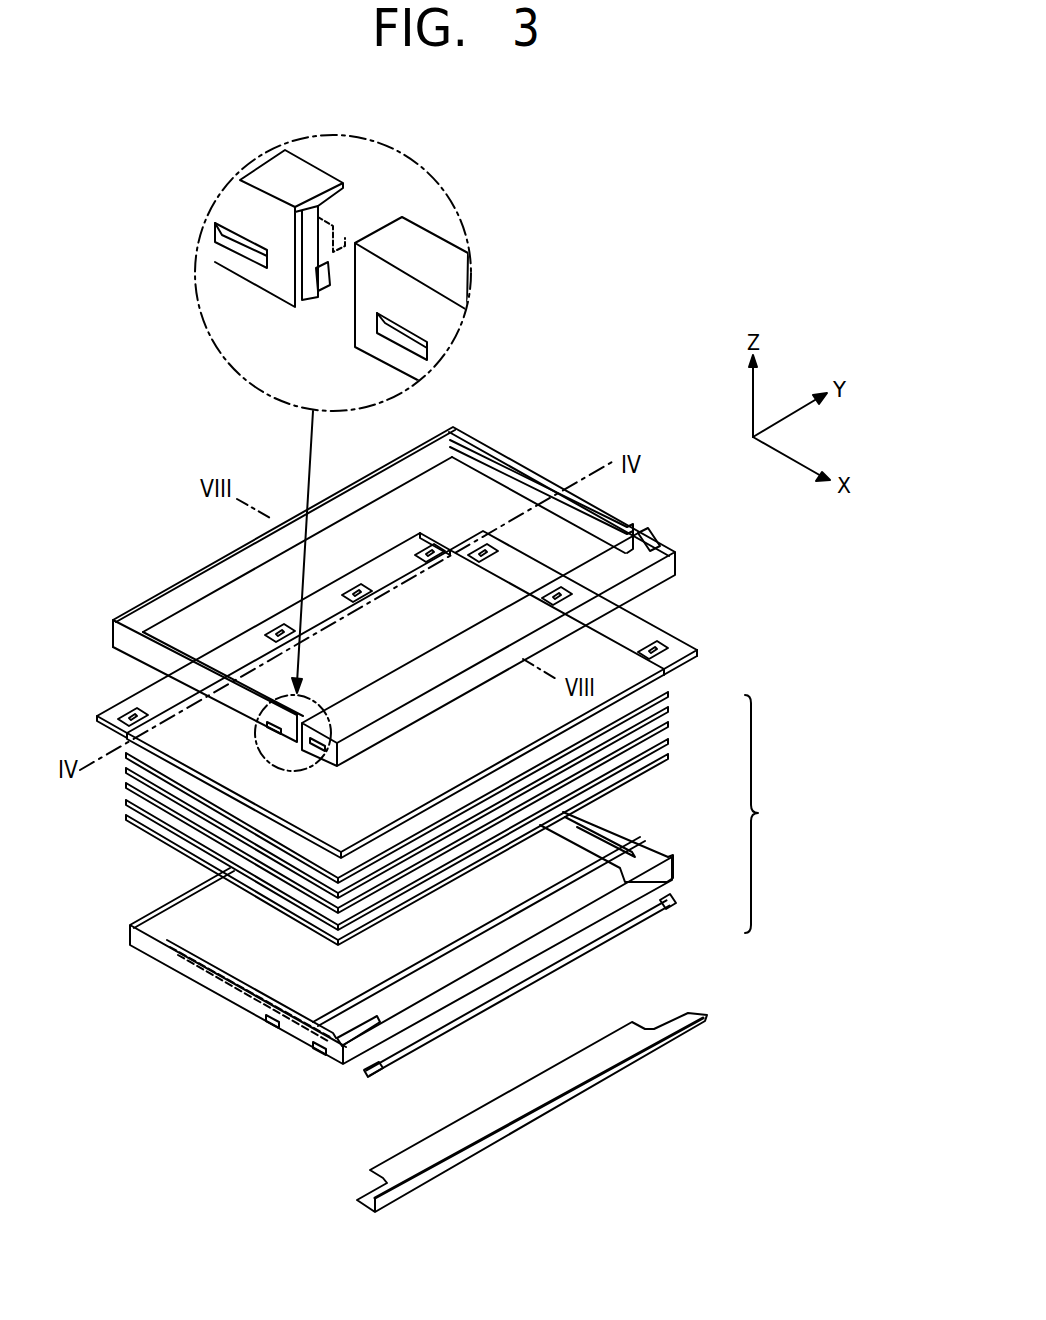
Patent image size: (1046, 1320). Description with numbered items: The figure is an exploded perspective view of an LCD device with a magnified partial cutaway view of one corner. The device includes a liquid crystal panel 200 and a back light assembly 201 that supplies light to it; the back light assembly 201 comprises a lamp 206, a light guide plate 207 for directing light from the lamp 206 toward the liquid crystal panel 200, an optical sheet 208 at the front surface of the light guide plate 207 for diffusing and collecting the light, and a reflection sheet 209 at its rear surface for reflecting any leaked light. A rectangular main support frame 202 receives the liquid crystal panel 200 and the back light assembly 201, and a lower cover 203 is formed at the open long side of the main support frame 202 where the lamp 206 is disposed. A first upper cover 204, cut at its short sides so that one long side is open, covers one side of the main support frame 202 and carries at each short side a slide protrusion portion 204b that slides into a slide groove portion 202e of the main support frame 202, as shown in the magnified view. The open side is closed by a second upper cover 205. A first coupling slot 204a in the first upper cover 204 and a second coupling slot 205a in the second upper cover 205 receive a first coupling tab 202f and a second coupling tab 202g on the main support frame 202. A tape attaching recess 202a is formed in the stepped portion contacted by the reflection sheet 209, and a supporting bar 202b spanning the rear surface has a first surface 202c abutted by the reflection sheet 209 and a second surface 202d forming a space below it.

The liquid crystal panel 200 is at (603, 650).
The back light assembly 201 is at (770, 814).
The main support frame 202 is at (250, 1023).
The tape attaching recess 202a is at (188, 963).
The supporting bar 202b is at (310, 998).
The first surface 202c is at (367, 988).
The second surface 202d is at (383, 983).
The slide groove portion 202e is at (333, 268).
The first coupling tab 202f is at (267, 1025).
The second coupling tab 202g is at (315, 1052).
The lower cover 203 is at (707, 1015).
The first upper cover 204 is at (613, 520).
The first coupling slot 204a is at (243, 252).
The slide protrusion portion 204b is at (322, 293).
The second upper cover 205 is at (660, 538).
The second coupling slot 205a is at (425, 347).
The lamp 206 is at (675, 902).
The light guide plate 207 is at (655, 738).
The optical sheet 208 is at (673, 693).
The reflection sheet 209 is at (650, 760).